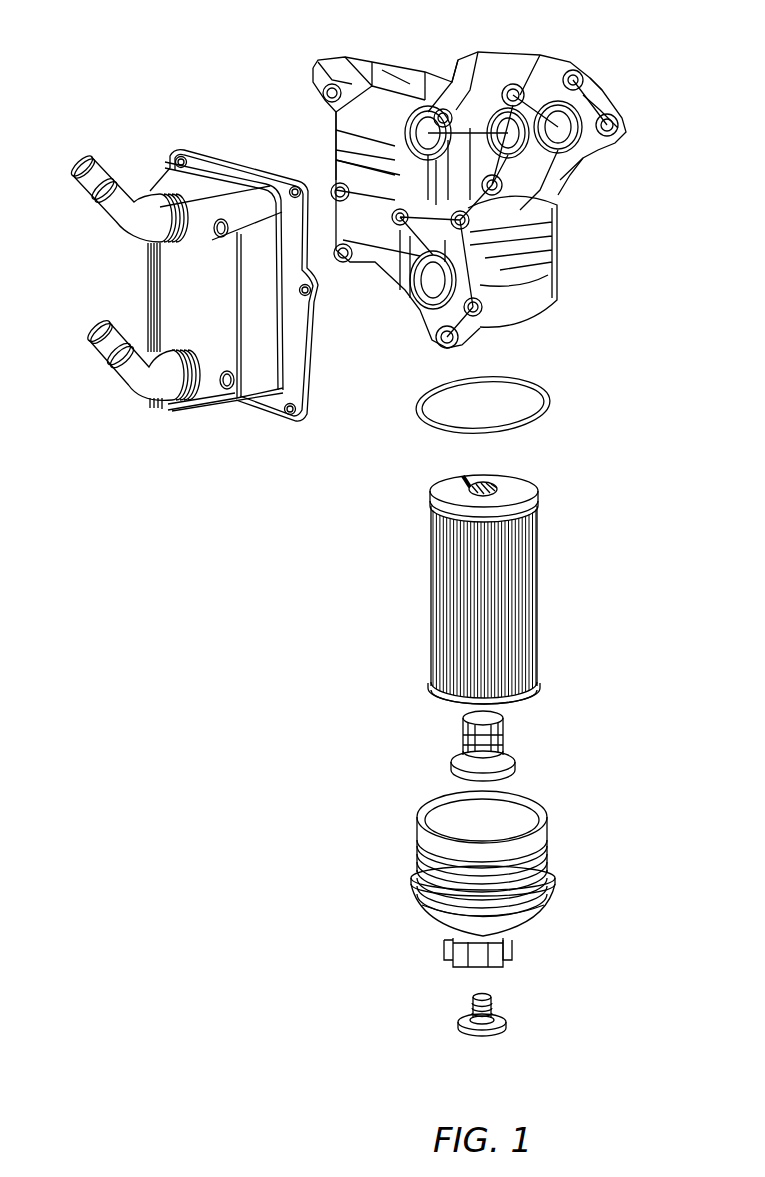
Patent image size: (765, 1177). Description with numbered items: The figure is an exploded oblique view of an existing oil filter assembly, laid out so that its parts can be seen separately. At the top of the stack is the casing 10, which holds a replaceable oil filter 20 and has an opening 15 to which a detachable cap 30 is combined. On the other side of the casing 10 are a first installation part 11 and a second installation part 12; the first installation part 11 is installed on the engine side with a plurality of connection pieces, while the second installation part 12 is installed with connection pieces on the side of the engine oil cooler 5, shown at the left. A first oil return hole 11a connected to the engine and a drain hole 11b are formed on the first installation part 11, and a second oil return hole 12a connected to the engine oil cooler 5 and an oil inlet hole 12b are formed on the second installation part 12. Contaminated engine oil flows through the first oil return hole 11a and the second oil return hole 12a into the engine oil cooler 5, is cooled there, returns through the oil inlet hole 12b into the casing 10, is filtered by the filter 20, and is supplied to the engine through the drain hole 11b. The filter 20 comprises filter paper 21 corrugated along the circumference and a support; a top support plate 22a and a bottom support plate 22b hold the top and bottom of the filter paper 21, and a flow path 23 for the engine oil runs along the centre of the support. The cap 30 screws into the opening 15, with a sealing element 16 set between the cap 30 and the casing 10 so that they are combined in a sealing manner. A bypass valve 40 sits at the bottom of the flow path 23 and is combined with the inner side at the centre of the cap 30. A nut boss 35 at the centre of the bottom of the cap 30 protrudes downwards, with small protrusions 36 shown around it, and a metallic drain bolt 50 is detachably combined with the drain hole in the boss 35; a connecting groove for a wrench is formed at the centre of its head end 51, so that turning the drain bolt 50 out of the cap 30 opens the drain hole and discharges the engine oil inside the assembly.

The engine oil cooler 5 is at (210, 390).
The casing 10 is at (482, 177).
The first installation part 11 is at (607, 97).
The first oil return hole 11a is at (487, 55).
The drain hole 11b is at (583, 150).
The second installation part 12 is at (367, 167).
The second oil return hole 12a is at (425, 107).
The oil inlet hole 12b is at (413, 303).
The opening 15 is at (482, 193).
The sealing element 16 is at (548, 403).
The oil filter 20 is at (499, 592).
The filter paper 21 is at (430, 573).
The top support plate 22a is at (520, 483).
The bottom support plate 22b is at (517, 697).
The flow path 23 is at (460, 470).
The cap 30 is at (488, 890).
The nut boss 35 is at (460, 957).
The protrusion 36 is at (447, 947).
The bypass valve 40 is at (440, 737).
The drain bolt 50 is at (523, 1041).
The head end 51 is at (480, 1036).